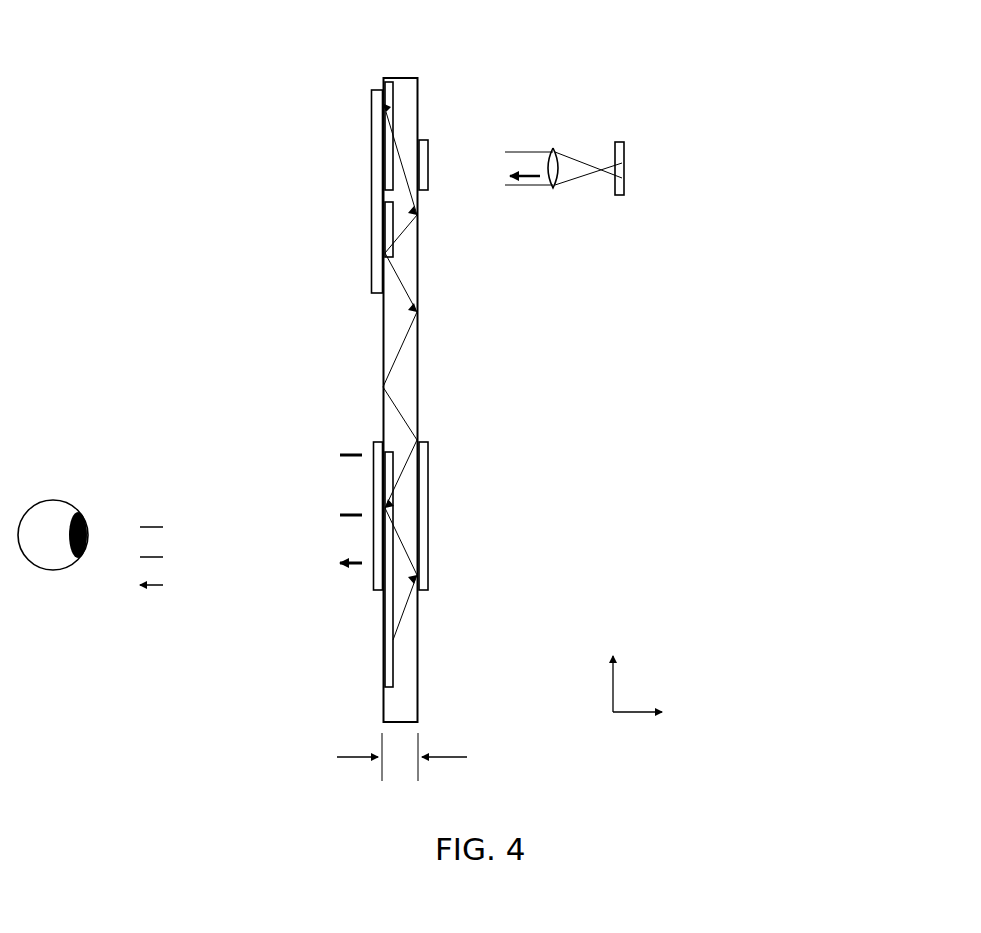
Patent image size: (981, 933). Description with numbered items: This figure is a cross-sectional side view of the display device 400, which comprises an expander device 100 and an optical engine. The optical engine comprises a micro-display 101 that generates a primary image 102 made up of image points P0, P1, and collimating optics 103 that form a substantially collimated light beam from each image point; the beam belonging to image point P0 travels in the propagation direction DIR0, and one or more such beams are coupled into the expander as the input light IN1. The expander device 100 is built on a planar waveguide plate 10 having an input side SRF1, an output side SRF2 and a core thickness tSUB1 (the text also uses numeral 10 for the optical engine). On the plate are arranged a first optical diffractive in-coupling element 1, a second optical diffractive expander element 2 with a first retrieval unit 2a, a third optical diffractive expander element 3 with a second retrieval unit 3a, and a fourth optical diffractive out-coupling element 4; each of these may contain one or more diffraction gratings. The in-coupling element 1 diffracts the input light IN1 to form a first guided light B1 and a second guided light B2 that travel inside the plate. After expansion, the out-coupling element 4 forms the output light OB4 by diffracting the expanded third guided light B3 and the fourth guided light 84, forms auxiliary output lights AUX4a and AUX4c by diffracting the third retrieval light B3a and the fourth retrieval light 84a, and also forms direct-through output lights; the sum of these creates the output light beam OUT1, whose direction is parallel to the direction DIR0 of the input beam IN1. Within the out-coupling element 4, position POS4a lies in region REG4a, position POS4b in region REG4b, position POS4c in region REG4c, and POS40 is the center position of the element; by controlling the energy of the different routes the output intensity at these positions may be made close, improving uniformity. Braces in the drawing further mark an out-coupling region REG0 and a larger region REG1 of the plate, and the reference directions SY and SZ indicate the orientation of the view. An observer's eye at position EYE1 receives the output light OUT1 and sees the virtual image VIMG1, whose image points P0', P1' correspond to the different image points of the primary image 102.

The expander device 100 is at (432, 72).
The display device 400 is at (227, 132).
The planar waveguide plate 10 is at (382, 305).
The first optical diffractive in-coupling element 1 is at (415, 186).
The second optical diffractive expander element 2 is at (371, 133).
The first retrieval unit 2a is at (385, 100).
The first guided light B1 is at (400, 124).
The second guided light B2 is at (385, 228).
The expanded third guided light B3 is at (400, 282).
The third retrieval light B3a is at (452, 284).
The second retrieval unit 3a is at (418, 228).
The third optical diffractive expander element 3 is at (385, 648).
The fourth optical diffractive out-coupling element 4 is at (373, 446).
The fourth guided light 84 is at (393, 617).
The fourth retrieval light 84a is at (490, 668).
The input side surface SRF1 is at (385, 333).
The output side surface SRF2 is at (385, 355).
The output light OB4 is at (347, 499).
The position POS4a is at (372, 465).
The position POS4b is at (375, 580).
The position POS4c is at (380, 584).
The center position POS40 is at (387, 509).
The auxiliary output light AUX4a is at (372, 471).
The auxiliary output light AUX4c is at (372, 591).
The region REG4a is at (428, 443).
The region REG4b is at (428, 537).
The region REG4c is at (476, 586).
The out-coupling region REG0 is at (504, 442).
The first region REG1 is at (568, 455).
The input light beams IN1 is at (493, 150).
The propagation direction DIR0 is at (529, 168).
The collimating optics 103 is at (553, 146).
The micro-display 101 is at (620, 141).
The primary image 102 is at (643, 193).
The image point P0 is at (665, 179).
The image point P1 is at (665, 194).
The eye position EYE1 is at (55, 500).
The output light beam OUT1 is at (205, 437).
The virtual image VIMG1 is at (935, 503).
The virtual image point P1' is at (750, 608).
The virtual image point P0' is at (849, 603).
The direction SY is at (615, 672).
The direction SZ is at (656, 712).
The waveguide plate thickness tSUB1 is at (402, 757).